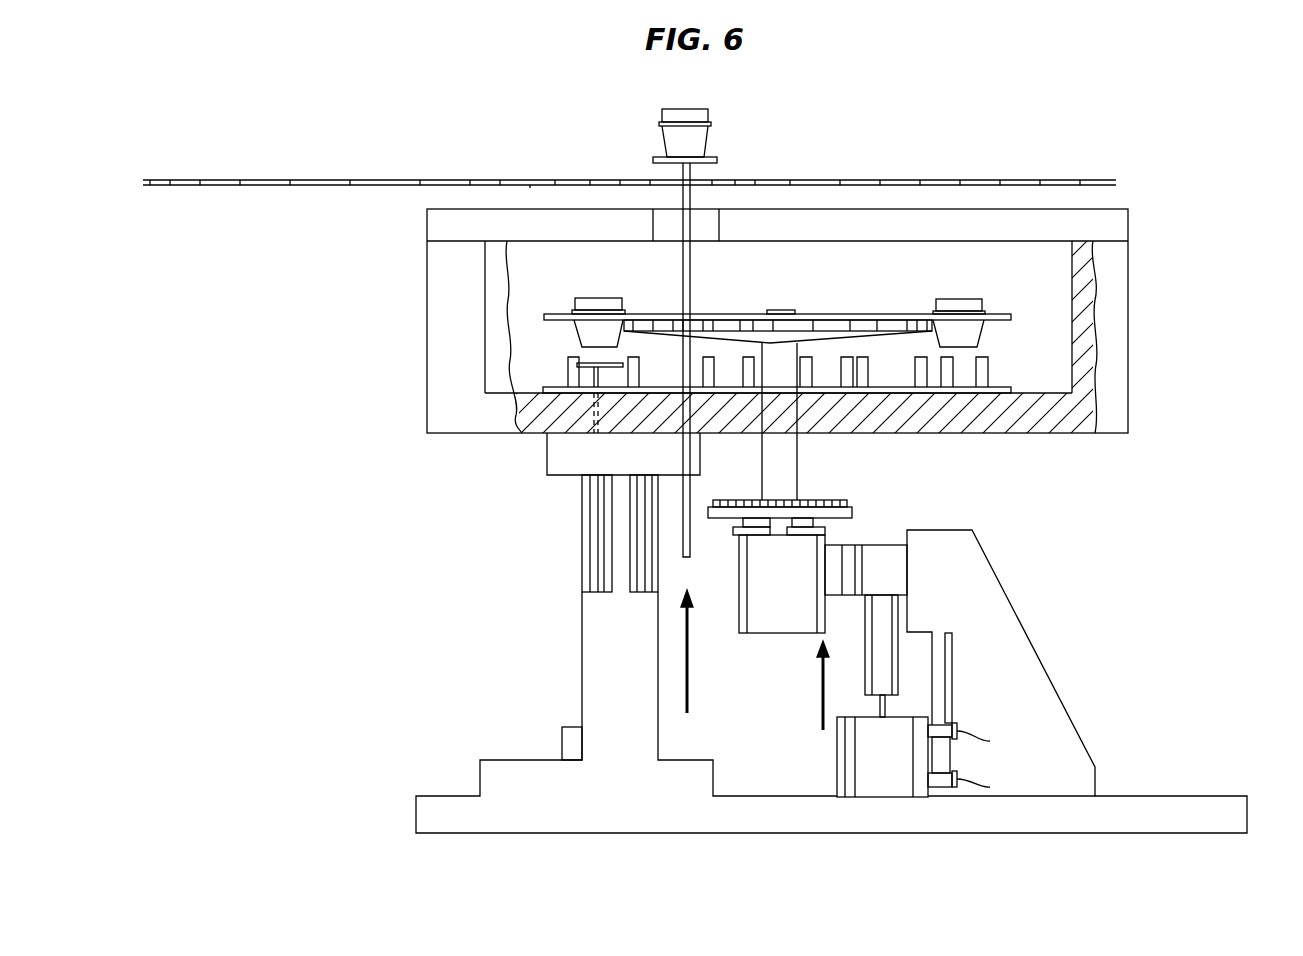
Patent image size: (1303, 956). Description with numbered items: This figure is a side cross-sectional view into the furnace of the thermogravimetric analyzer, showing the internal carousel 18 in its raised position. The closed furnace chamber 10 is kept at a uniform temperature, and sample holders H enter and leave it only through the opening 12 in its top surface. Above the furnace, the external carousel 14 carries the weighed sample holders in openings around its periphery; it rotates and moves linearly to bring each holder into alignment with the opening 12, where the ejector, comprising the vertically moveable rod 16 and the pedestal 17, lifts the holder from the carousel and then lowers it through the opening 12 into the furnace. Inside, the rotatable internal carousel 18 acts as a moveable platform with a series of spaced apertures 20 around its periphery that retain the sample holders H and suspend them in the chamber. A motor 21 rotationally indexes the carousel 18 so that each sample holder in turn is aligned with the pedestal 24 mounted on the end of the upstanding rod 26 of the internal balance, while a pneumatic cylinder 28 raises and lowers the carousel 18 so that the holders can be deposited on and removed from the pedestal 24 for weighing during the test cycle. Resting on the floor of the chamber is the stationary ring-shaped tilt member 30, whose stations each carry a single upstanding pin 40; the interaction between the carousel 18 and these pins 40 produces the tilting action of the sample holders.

The furnace chamber 10 is at (1128, 327).
The opening 12 is at (668, 236).
The external carousel 14 is at (1238, 137).
The ejector rod 16 is at (593, 371).
The pedestal 17 is at (590, 363).
The internal carousel 18 is at (893, 313).
The apertures 20 is at (847, 313).
The motor 21 is at (762, 620).
The pedestal 24 is at (717, 161).
The upstanding rod 26 is at (691, 287).
The pneumatic cylinder 28 is at (886, 775).
The tilt member 30 is at (1010, 388).
The pin 40 is at (709, 387).
The sample holders H is at (590, 298).